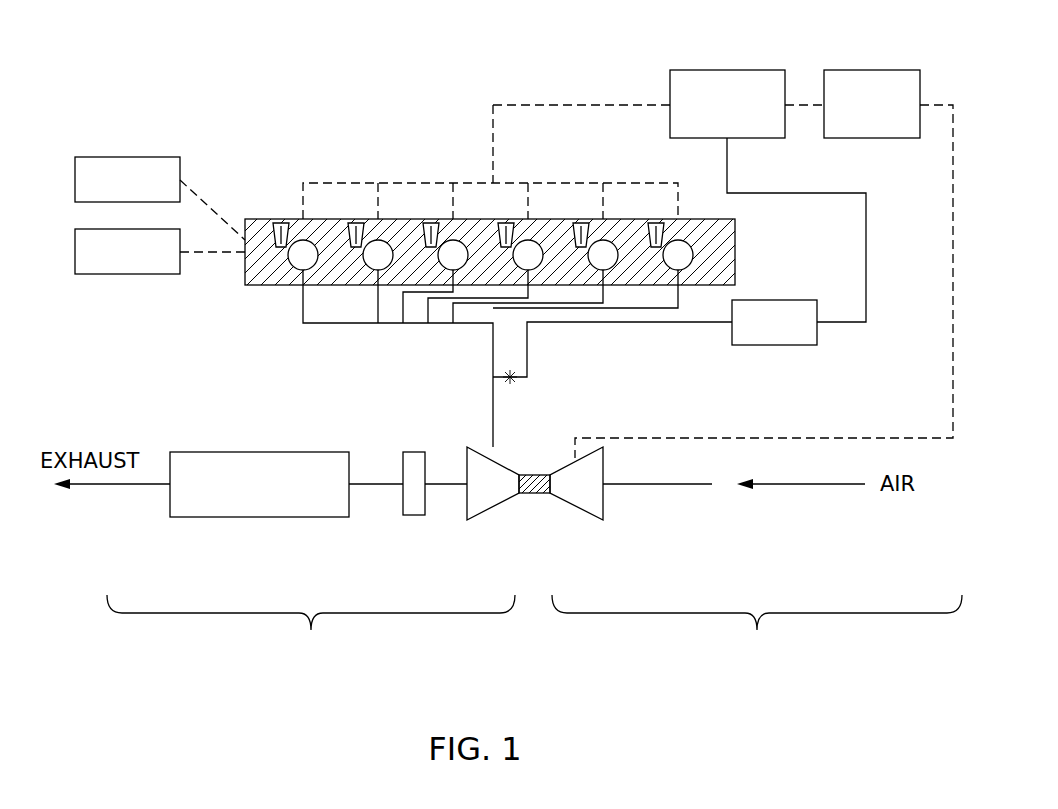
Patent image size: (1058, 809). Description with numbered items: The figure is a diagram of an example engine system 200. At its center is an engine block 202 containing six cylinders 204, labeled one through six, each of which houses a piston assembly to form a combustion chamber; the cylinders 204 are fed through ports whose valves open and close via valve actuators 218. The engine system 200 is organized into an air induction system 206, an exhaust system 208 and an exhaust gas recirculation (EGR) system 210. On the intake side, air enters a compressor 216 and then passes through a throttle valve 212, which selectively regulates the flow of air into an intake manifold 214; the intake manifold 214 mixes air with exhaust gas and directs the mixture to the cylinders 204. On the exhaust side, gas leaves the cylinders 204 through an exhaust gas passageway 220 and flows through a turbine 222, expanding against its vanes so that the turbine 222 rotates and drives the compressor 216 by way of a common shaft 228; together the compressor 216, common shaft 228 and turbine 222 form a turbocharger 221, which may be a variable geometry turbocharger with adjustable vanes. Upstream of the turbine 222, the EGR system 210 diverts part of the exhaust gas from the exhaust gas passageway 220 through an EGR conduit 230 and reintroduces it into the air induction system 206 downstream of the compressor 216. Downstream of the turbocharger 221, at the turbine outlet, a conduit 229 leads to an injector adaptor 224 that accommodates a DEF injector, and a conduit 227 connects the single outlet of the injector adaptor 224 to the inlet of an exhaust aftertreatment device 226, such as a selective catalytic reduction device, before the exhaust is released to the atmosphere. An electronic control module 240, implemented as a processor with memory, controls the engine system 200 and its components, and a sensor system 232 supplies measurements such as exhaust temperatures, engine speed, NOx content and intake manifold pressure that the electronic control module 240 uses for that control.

The engine system 200 is at (232, 76).
The engine block 202 is at (258, 219).
The cylinders 204 is at (408, 240).
The air induction system 206 is at (757, 627).
The exhaust system 208 is at (311, 627).
The exhaust gas recirculation (EGR) system 210 is at (788, 300).
The throttle valve 212 is at (872, 70).
The intake manifold 214 is at (727, 70).
The compressor 216 is at (605, 503).
The valve actuators 218 is at (580, 237).
The exhaust gas passageway 220 is at (493, 360).
The turbocharger 221 is at (574, 500).
The turbine 222 is at (497, 512).
The injector adaptor 224 is at (415, 452).
The exhaust aftertreatment device 226 is at (258, 452).
The conduit 227 is at (385, 487).
The common shaft 228 is at (537, 470).
The conduit 229 is at (452, 487).
The EGR conduit 230 is at (638, 323).
The sensor system 232 is at (127, 179).
The electronic control module (ECM) 240 is at (127, 251).